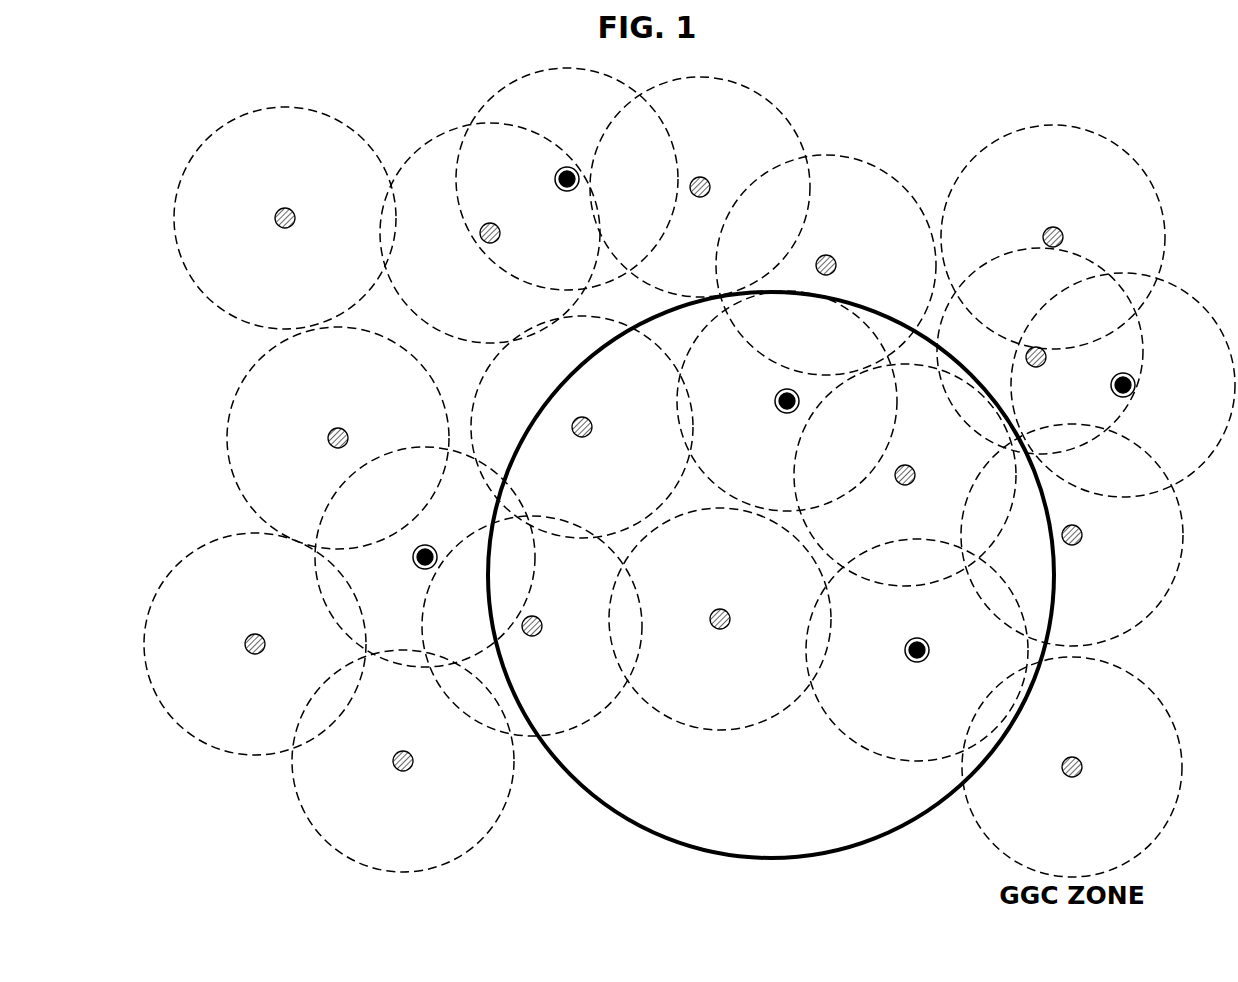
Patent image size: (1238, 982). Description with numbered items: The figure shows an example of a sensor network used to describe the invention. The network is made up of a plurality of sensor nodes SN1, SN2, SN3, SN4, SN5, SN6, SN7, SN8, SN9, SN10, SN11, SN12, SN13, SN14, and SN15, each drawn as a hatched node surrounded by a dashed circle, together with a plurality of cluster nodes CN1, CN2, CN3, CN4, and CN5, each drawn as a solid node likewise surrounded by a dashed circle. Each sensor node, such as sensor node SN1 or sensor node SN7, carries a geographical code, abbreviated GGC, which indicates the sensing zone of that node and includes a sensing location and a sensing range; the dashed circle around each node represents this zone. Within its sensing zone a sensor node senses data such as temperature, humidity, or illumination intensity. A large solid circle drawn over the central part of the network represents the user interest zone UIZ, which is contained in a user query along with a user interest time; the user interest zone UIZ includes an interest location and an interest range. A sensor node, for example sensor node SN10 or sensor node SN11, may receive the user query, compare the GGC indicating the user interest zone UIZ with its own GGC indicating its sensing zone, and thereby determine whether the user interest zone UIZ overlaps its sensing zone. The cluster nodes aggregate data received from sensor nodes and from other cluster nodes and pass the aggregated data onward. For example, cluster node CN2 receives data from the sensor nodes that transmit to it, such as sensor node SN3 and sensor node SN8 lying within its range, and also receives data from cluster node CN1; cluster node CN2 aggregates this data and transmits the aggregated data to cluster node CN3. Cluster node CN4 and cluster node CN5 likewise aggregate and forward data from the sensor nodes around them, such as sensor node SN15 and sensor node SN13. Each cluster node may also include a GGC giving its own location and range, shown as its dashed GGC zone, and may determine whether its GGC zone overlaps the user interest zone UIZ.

The sensor node SN1 is at (285, 218).
The sensor node SN2 is at (338, 438).
The sensor node SN3 is at (490, 233).
The sensor node SN4 is at (255, 644).
The sensor node SN5 is at (403, 761).
The sensor node SN6 is at (532, 626).
The sensor node SN7 is at (582, 427).
The sensor node SN8 is at (700, 187).
The sensor node SN9 is at (826, 265).
The sensor node SN10 is at (720, 619).
The sensor node SN11 is at (905, 475).
The sensor node SN12 is at (1053, 237).
The sensor node SN13 is at (1040, 351).
The sensor node SN14 is at (1072, 535).
The sensor node SN15 is at (1072, 767).
The cluster node CN1 is at (425, 557).
The cluster node CN2 is at (567, 179).
The cluster node CN3 is at (787, 401).
The cluster node CN4 is at (917, 650).
The cluster node CN5 is at (1123, 385).
The user interest zone UIZ is at (771, 591).